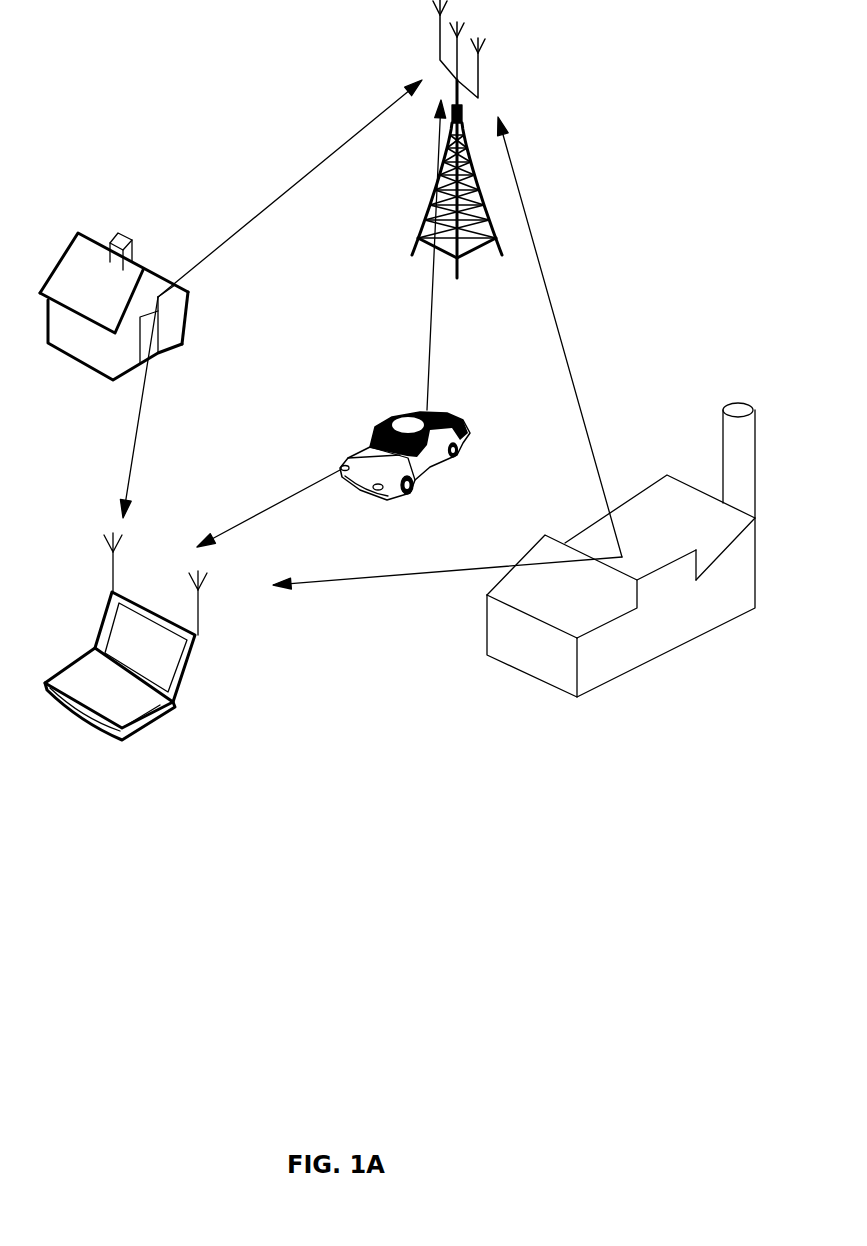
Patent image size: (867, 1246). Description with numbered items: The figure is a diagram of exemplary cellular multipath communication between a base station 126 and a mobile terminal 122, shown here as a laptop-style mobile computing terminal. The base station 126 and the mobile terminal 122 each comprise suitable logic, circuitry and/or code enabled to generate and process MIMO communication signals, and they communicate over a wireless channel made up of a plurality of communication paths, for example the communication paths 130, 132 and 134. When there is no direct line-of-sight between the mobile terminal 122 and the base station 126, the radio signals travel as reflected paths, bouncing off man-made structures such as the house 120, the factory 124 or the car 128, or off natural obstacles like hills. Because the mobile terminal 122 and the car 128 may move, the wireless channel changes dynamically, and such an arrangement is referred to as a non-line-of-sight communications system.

The house 120 is at (80, 233).
The mobile terminal 122 is at (192, 653).
The factory 124 is at (592, 688).
The base station 126 is at (457, 278).
The car 128 is at (408, 495).
The communication path 130 is at (238, 232).
The communication path 132 is at (427, 367).
The communication path 134 is at (573, 315).